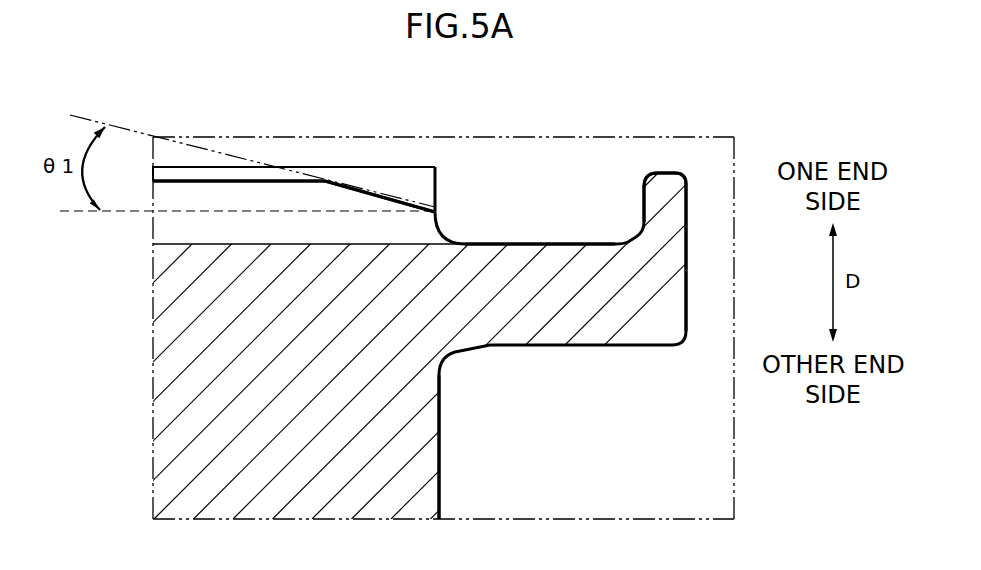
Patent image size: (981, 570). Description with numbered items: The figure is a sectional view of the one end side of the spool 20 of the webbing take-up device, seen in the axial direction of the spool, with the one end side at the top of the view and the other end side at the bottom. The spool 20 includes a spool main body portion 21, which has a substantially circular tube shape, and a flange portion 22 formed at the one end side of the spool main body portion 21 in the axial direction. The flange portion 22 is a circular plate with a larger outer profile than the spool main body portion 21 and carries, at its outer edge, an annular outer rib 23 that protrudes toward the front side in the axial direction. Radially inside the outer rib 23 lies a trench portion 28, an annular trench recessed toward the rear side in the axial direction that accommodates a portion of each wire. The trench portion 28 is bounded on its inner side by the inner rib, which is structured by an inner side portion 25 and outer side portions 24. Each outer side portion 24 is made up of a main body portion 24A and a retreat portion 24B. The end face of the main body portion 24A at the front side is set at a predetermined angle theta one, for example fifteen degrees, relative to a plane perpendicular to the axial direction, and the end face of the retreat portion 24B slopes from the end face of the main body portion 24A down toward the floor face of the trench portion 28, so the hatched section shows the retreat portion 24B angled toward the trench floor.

The spool 20 is at (690, 163).
The spool main body portion 21 is at (443, 414).
The flange portion 22 is at (687, 273).
The outer rib 23 is at (665, 183).
The outer side portion 24 is at (225, 172).
The main body portion 24A is at (192, 182).
The retreat portion 24B is at (375, 193).
The inner side portion 25 is at (305, 160).
The trench portion 28 is at (527, 243).